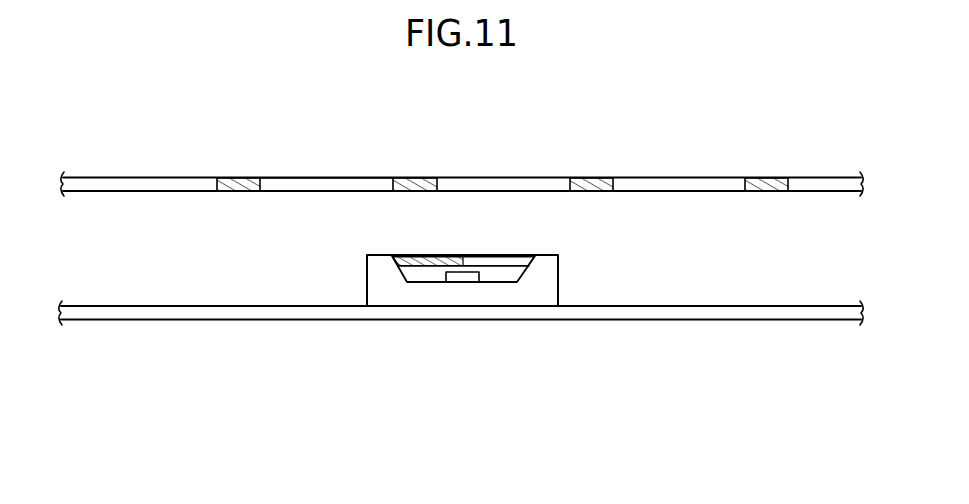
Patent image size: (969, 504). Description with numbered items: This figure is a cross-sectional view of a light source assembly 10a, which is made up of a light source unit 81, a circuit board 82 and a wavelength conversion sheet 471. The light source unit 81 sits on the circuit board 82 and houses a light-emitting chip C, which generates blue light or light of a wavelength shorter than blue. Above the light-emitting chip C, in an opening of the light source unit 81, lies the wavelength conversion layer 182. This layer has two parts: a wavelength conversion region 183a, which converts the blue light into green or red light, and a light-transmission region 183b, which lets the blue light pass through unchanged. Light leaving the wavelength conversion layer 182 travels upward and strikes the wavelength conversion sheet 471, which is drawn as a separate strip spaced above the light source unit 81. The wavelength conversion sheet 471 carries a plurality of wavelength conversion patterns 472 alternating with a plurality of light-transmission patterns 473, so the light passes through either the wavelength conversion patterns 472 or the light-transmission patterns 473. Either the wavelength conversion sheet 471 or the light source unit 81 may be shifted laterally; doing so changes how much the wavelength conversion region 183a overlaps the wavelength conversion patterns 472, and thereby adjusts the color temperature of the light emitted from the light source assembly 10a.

The light source module 10a is at (461, 363).
The wavelength conversion sheet 471 is at (295, 106).
The wavelength conversion patterns 472 is at (233, 178).
The light-transmission patterns 473 is at (295, 187).
The light source unit 81 is at (360, 282).
The circuit board 82 is at (433, 312).
The wavelength conversion layer 182 is at (454, 340).
The wavelength conversion region 183a is at (392, 258).
The light-transmission region 183b is at (500, 258).
The light-emitting chip C is at (463, 283).